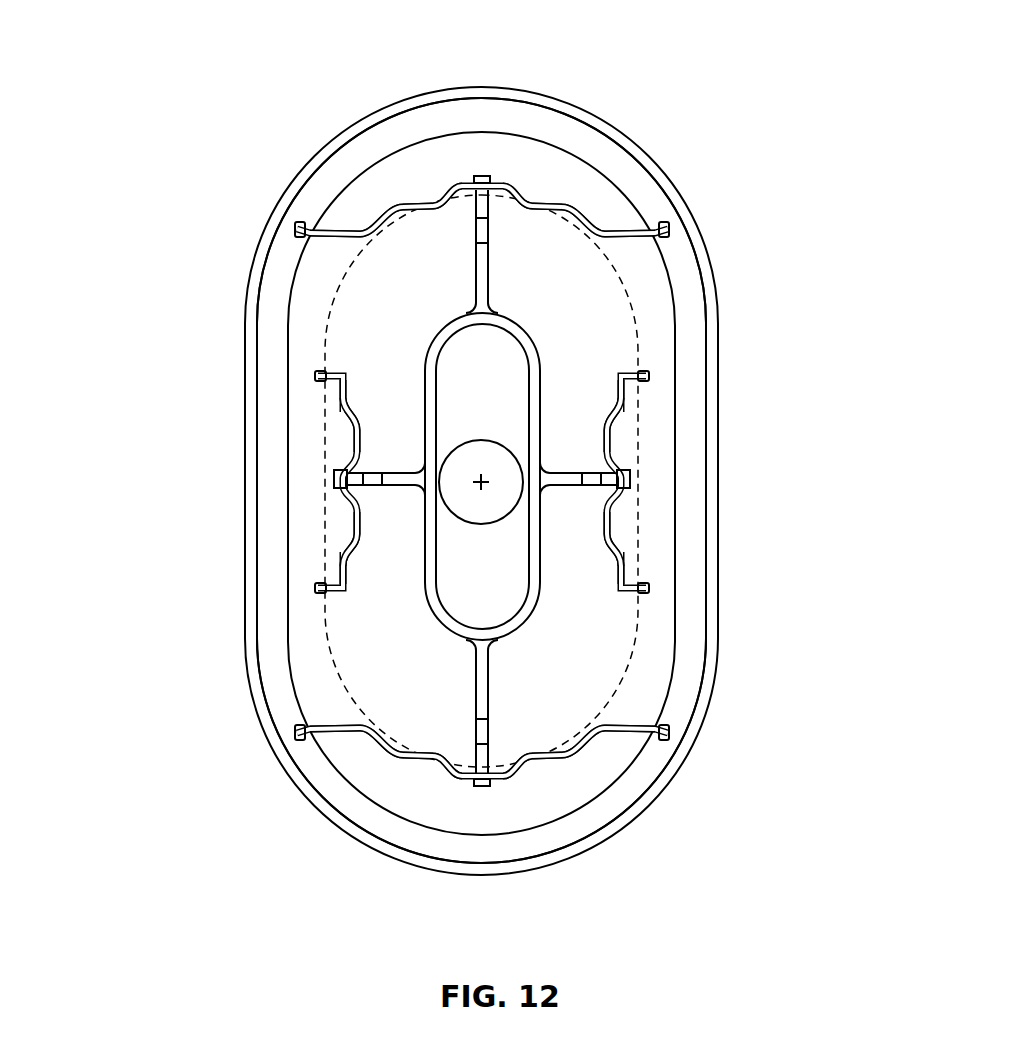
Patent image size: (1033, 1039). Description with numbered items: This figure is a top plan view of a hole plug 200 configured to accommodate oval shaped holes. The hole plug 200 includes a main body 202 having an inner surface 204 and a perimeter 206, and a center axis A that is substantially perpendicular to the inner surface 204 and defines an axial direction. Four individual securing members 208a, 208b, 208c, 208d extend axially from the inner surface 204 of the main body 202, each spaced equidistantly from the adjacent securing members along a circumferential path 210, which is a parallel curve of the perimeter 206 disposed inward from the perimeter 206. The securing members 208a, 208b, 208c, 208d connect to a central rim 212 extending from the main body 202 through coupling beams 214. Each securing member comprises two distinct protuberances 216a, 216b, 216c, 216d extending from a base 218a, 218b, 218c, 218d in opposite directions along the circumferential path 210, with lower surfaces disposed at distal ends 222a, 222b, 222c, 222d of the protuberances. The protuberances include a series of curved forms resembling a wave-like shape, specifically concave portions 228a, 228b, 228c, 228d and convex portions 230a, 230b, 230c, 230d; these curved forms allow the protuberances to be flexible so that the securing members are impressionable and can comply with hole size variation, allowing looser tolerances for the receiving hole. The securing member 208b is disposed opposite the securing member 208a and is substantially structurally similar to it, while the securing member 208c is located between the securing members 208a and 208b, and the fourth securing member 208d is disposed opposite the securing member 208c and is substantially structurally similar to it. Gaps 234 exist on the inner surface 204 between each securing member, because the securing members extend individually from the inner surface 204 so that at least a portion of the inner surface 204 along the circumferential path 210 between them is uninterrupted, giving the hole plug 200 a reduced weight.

The hole plug 200 is at (146, 38).
The main body 202 is at (340, 812).
The inner surface 204 is at (292, 333).
The perimeter 206 is at (605, 118).
The securing member 208a is at (540, 770).
The securing member 208b is at (508, 178).
The securing member 208c is at (625, 507).
The securing member 208d is at (360, 496).
The circumferential path 210 is at (708, 292).
The central rim 212 is at (540, 338).
The coupling beams 214 is at (490, 292).
The protuberances 216a is at (352, 725).
The protuberances 216b is at (300, 228).
The protuberances 216c is at (620, 428).
The protuberances 216d is at (351, 400).
The base 218a is at (462, 782).
The base 218b is at (472, 176).
The base 218c is at (612, 476).
The base 218d is at (333, 490).
The distal ends 222a is at (298, 735).
The distal ends 222b is at (298, 225).
The distal ends 222c is at (646, 376).
The distal ends 222d is at (318, 375).
The concave portions 228a is at (346, 740).
The concave portions 228b is at (352, 228).
The concave portions 228c is at (624, 443).
The concave portions 228d is at (346, 441).
The convex portions 230a is at (397, 764).
The convex portions 230b is at (402, 196).
The convex portions 230c is at (636, 408).
The convex portions 230d is at (332, 408).
The gaps 234 is at (318, 296).
The center axis A is at (484, 479).